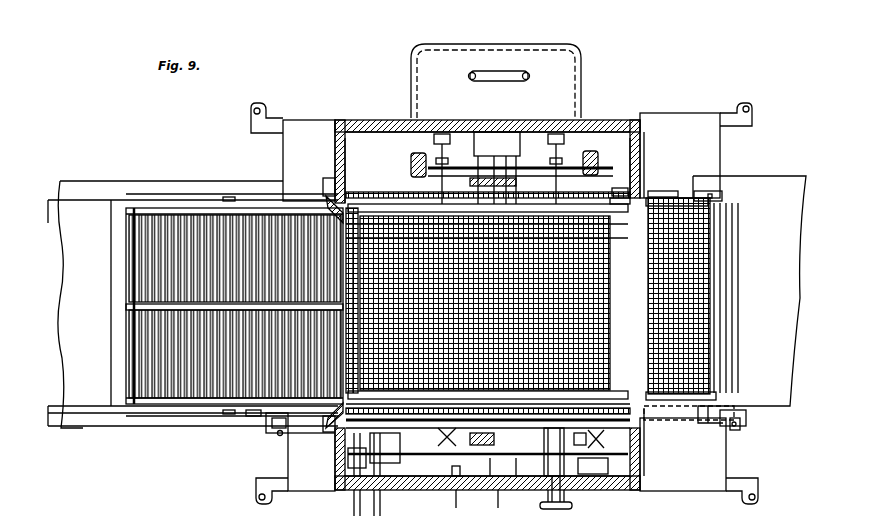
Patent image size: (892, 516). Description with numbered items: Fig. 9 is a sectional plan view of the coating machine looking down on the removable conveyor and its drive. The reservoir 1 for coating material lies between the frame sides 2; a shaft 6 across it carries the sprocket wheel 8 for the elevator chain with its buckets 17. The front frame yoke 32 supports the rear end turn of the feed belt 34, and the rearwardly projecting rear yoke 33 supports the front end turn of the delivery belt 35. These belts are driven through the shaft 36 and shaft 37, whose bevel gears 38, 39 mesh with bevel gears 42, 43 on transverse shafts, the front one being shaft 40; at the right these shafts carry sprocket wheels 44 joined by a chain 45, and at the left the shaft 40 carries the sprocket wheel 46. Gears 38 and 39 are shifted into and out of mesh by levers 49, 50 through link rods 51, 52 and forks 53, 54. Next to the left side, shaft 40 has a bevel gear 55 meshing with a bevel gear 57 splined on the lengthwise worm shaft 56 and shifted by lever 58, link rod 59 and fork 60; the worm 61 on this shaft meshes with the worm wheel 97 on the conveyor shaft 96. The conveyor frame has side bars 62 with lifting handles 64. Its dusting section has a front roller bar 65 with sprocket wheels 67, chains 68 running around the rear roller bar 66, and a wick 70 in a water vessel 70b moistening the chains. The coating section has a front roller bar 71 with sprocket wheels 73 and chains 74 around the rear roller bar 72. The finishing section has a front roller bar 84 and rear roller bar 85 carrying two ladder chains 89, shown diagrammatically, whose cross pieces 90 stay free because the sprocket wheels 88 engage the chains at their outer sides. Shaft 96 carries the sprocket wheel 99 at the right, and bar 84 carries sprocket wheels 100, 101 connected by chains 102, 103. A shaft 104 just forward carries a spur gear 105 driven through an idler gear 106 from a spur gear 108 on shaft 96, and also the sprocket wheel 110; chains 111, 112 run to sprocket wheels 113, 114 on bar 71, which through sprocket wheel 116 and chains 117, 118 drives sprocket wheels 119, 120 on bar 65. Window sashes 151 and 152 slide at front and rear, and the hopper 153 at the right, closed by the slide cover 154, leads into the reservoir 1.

The reservoir 1 is at (348, 127).
The frame sides 2 is at (378, 127).
The shaft 6 is at (486, 124).
The sprocket wheel 8 is at (558, 169).
The buckets 17 is at (406, 150).
The front frame yoke 32 is at (700, 152).
The rear frame yoke 33 is at (276, 152).
The feed belt 34 is at (758, 195).
The delivery belt 35 is at (78, 390).
The shaft 36 is at (258, 422).
The shaft 37 is at (732, 418).
The bevel gear 38 is at (488, 407).
The bevel gear 39 is at (488, 396).
The shaft 40 is at (536, 496).
The bevel gear 42 is at (488, 404).
The bevel gear 43 is at (425, 440).
The sprocket wheels 44 is at (425, 165).
The chain 45 is at (470, 160).
The sprocket wheel 46 is at (588, 152).
The lever 49 is at (360, 498).
The lever 50 is at (346, 498).
The link rod 51 is at (593, 466).
The link rod 52 is at (357, 450).
The fork 53 is at (589, 439).
The fork 54 is at (405, 432).
The bevel gear 55 is at (506, 468).
The worm shaft 56 is at (484, 468).
The bevel gear 57 is at (545, 452).
The lever 58 is at (456, 503).
The link rod 59 is at (455, 486).
The fork 60 is at (492, 503).
The worm 61 is at (466, 433).
The side frame bars 62 is at (194, 192).
The handles 64 is at (222, 192).
The front roller bar 65 is at (712, 290).
The rear roller bar 66 is at (610, 194).
The sprocket wheels 67 is at (710, 265).
The sprocket chains 68 is at (724, 338).
The wick 70 is at (718, 315).
The vessel 70b is at (700, 362).
The front roller bar 71 is at (578, 186).
The rear roller bar 72 is at (366, 200).
The sprocket wheels 73 is at (540, 168).
The chains 74 is at (384, 198).
The front roller bar 84 is at (312, 200).
The rear roller bar 85 is at (122, 238).
The sprocket wheels 88 is at (316, 176).
The ladder chains 89 is at (166, 196).
The cross pieces 90 is at (132, 355).
The shaft 96 is at (485, 298).
The worm wheel 97 is at (488, 401).
The sprocket wheel 99 is at (485, 184).
The sprocket wheel 100 is at (326, 455).
The sprocket wheel 101 is at (487, 170).
The sprocket chain 102 is at (488, 396).
The sprocket chain 103 is at (488, 212).
The shaft 104 is at (488, 188).
The spur gear 105 is at (510, 124).
The idler gear 106 is at (496, 124).
The spur gear 108 is at (470, 140).
The sprocket wheel 110 is at (548, 124).
The chain 111 is at (652, 470).
The chain 112 is at (608, 182).
The sprocket wheel 113 is at (636, 430).
The sprocket wheel 114 is at (632, 150).
The sprocket wheel 116 is at (650, 185).
The chain 117 is at (704, 415).
The chain 118 is at (709, 189).
The sprocket wheel 119 is at (700, 386).
The sprocket wheel 120 is at (700, 200).
The window sash 151 is at (704, 245).
The window sash 152 is at (276, 428).
The hopper 153 is at (573, 100).
The slide cover 154 is at (572, 50).